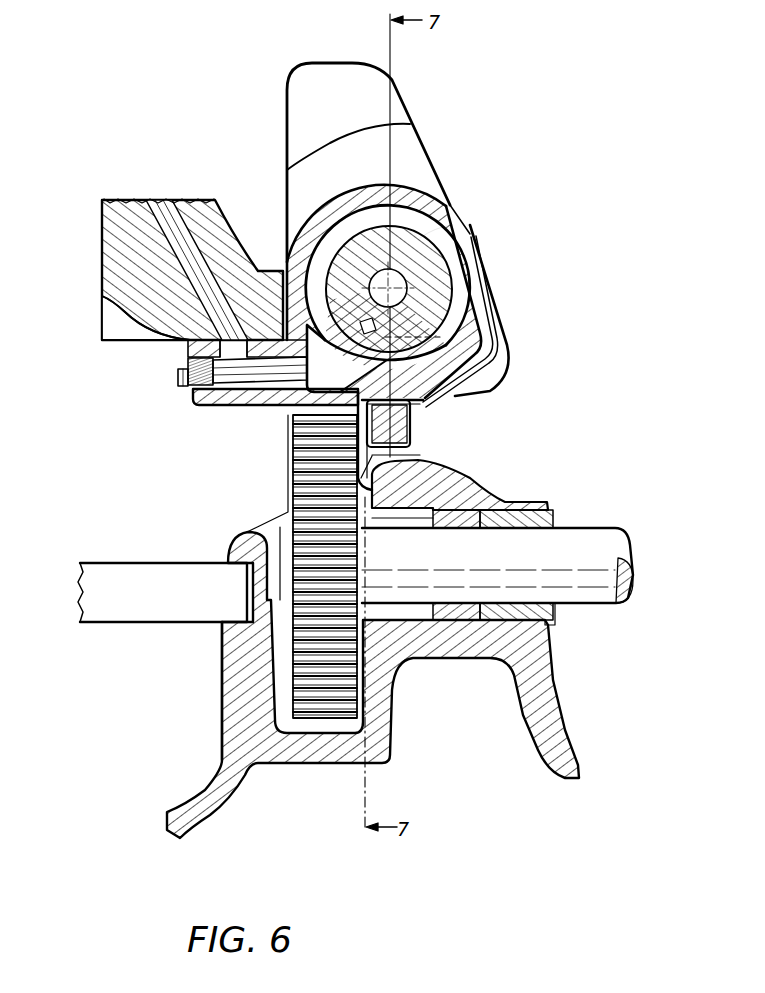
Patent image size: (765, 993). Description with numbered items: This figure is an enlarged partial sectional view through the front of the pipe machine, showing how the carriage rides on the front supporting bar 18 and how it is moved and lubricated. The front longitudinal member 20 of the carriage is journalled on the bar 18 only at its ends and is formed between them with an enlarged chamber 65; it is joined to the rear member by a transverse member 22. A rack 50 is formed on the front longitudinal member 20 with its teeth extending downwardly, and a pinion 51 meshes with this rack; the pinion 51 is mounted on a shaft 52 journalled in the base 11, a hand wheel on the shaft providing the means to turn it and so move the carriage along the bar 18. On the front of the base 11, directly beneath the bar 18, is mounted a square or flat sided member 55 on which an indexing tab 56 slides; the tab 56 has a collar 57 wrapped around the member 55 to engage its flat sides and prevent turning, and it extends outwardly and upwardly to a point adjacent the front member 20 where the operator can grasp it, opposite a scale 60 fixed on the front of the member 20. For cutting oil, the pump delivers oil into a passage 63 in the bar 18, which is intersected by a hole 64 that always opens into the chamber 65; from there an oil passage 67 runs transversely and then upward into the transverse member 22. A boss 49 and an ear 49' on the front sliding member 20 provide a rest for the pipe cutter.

The base 11 is at (482, 642).
The bars 18 is at (433, 280).
The front longitudinal member 20 is at (413, 185).
The transverse member 22 is at (200, 198).
The boss 49 is at (383, 136).
The ear 49' is at (370, 161).
The rack 50 is at (290, 415).
The pinion 51 is at (285, 477).
The shaft 52 is at (565, 547).
The flat sided member 55 is at (425, 412).
The indexing tab 56 is at (478, 392).
The collar 57 is at (418, 447).
The scale 60 is at (485, 290).
The passage 63 is at (466, 231).
The hole 64 is at (440, 337).
The chamber 65 is at (450, 224).
The oil passage 67 is at (245, 352).